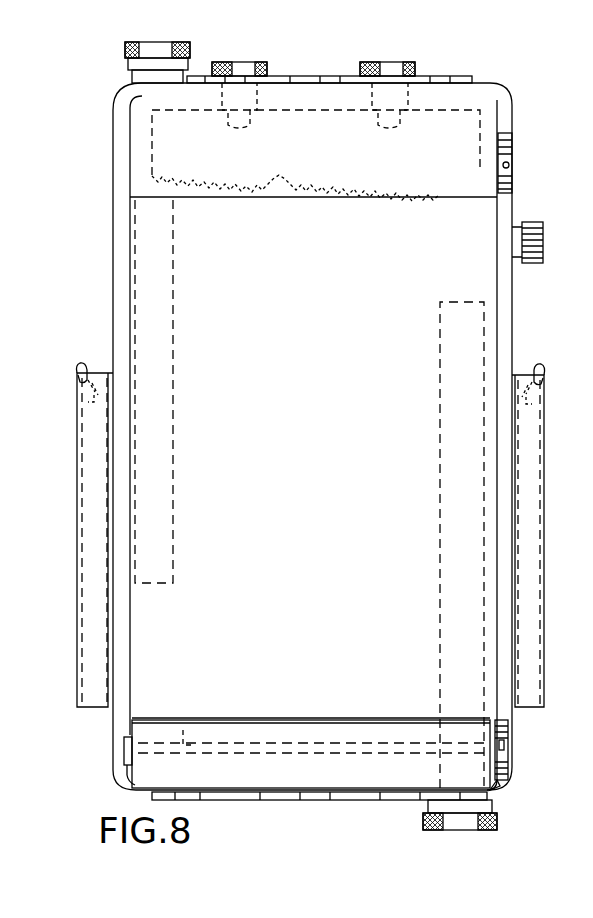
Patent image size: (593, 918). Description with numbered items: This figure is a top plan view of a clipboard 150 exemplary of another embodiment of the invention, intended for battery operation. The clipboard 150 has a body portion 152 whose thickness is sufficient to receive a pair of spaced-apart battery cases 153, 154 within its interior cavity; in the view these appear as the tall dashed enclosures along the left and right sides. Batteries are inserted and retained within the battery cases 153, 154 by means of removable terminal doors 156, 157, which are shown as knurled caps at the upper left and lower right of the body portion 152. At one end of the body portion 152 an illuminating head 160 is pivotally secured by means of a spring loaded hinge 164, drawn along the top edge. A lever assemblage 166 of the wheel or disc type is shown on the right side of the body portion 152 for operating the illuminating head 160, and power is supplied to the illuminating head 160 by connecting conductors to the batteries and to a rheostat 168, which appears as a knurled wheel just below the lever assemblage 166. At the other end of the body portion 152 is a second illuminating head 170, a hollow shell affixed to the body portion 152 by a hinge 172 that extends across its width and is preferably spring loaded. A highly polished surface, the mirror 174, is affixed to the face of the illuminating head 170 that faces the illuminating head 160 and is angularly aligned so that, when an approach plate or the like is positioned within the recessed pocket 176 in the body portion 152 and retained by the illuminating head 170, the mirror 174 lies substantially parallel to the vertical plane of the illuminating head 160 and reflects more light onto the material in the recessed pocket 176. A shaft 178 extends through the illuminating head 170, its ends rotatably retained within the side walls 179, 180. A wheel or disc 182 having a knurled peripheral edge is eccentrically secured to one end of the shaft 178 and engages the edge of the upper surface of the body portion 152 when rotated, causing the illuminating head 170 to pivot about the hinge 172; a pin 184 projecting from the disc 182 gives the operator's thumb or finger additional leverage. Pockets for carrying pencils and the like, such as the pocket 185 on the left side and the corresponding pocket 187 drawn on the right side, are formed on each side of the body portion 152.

The clipboard 150 is at (98, 206).
The body portion 152 is at (113, 258).
The battery case 153 is at (143, 305).
The battery case 154 is at (487, 341).
The terminal door 156 is at (125, 52).
The terminal door 157 is at (425, 818).
The illuminating head 160 is at (147, 99).
The spring loaded hinge 164 is at (331, 78).
The lever assemblage 166 is at (508, 183).
The rheostat 168 is at (543, 253).
The illuminating head 170 is at (268, 730).
The hinge 172 is at (303, 800).
The mirror 174 is at (361, 718).
The recessed pocket 176 is at (160, 618).
The shaft 178 is at (186, 730).
The side wall 179 is at (128, 740).
The side wall 180 is at (498, 790).
The wheel or disc 182 is at (502, 778).
The pin 184 is at (504, 748).
The pocket 185 is at (77, 506).
The right pocket 187 is at (545, 520).